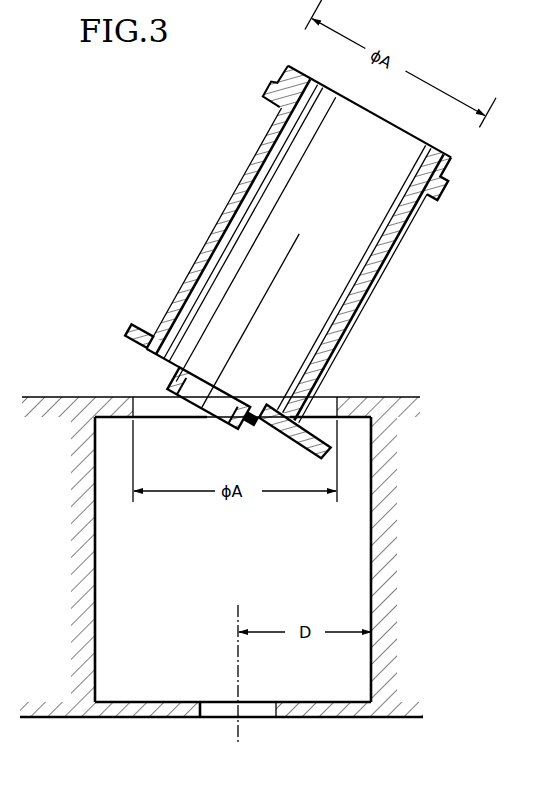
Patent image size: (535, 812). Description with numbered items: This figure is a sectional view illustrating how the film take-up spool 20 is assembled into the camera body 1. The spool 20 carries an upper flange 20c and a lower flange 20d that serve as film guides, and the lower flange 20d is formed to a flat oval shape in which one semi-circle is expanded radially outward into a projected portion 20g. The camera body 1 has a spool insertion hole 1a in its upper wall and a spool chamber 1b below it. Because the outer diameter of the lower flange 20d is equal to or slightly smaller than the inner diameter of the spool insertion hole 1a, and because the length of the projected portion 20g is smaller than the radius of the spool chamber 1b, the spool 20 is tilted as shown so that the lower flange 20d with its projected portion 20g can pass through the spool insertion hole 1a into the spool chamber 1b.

The camera body 1 is at (61, 682).
The spool insertion hole 1a is at (340, 404).
The spool chamber 1b is at (331, 684).
The film take-up spool 20 is at (375, 292).
The flange 20c is at (446, 189).
The lower flange 20d is at (132, 330).
The projected portion 20g is at (338, 449).